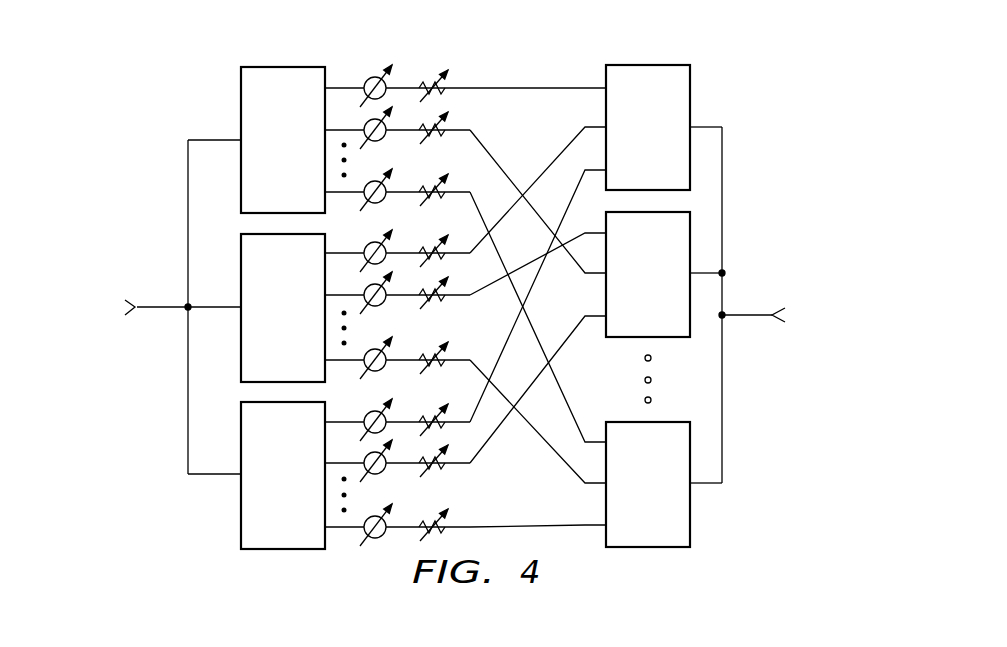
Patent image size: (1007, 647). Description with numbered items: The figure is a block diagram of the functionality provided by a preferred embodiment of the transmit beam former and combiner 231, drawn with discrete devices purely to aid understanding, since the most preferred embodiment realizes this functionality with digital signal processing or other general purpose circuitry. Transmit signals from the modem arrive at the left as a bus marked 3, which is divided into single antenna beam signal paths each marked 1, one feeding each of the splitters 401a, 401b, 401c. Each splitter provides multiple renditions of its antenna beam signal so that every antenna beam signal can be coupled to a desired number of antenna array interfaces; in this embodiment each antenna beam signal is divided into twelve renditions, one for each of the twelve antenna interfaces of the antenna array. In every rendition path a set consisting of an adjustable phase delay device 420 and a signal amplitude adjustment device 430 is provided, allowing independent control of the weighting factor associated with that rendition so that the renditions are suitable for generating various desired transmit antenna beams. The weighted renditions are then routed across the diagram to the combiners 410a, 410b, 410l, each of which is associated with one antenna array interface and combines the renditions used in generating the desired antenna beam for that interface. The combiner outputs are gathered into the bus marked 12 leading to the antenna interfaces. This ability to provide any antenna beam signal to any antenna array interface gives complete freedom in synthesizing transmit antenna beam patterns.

The transmit beam former and combiner 231 is at (798, 98).
The splitter 401a is at (256, 152).
The splitter 401b is at (256, 321).
The splitter 401c is at (257, 486).
The adjustable phase delay device 420 is at (370, 78).
The signal amplitude adjustment device 430 is at (428, 79).
The combiner 410a is at (622, 142).
The combiner 410b is at (622, 287).
The combiner 410l is at (627, 496).
The single signal line 1 is at (225, 130).
The three signal lines from modem 3 is at (167, 298).
The twelve signal lines to antenna interfaces 12 is at (763, 305).